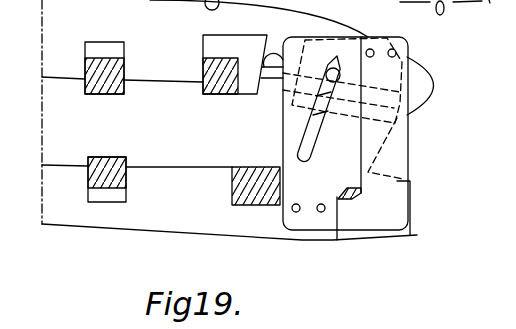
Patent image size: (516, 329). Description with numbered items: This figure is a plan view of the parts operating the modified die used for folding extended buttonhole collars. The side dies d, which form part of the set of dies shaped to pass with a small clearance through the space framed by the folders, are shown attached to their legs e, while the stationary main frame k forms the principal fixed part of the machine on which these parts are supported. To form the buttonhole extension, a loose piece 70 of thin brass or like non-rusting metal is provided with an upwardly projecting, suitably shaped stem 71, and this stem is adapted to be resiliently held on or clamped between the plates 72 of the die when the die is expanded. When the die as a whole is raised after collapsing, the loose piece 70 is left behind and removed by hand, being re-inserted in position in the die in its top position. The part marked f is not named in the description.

The side die d is at (157, 222).
The leg e is at (102, 95).
The main frame k is at (297, 150).
The cam f is at (425, 72).
The loose piece 70 is at (412, 203).
The stem 71 is at (352, 199).
The plates 72 is at (371, 49).